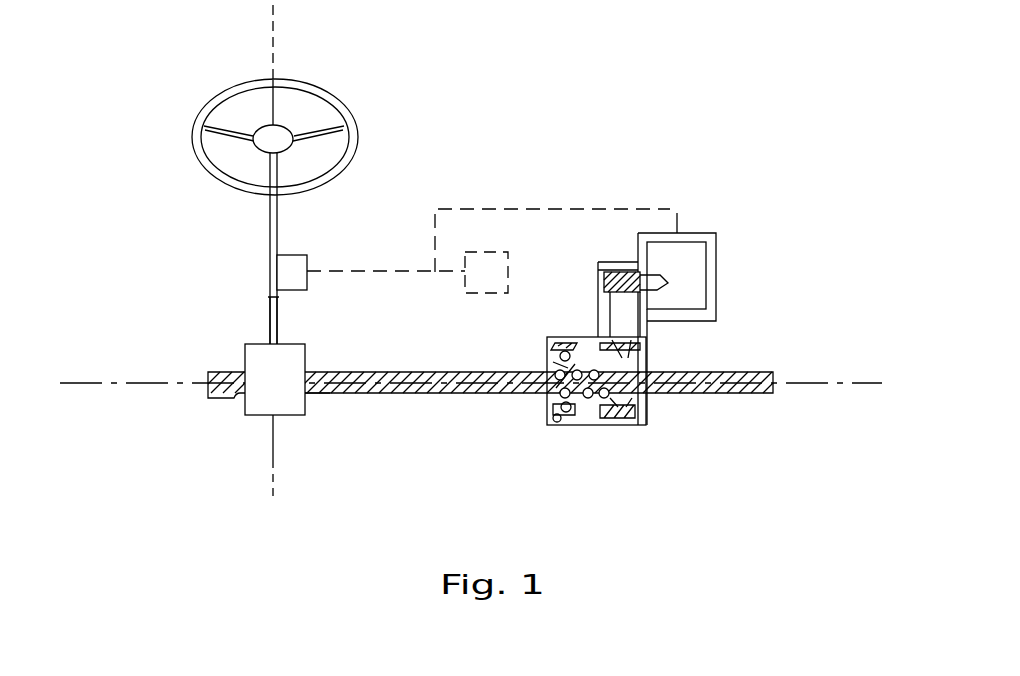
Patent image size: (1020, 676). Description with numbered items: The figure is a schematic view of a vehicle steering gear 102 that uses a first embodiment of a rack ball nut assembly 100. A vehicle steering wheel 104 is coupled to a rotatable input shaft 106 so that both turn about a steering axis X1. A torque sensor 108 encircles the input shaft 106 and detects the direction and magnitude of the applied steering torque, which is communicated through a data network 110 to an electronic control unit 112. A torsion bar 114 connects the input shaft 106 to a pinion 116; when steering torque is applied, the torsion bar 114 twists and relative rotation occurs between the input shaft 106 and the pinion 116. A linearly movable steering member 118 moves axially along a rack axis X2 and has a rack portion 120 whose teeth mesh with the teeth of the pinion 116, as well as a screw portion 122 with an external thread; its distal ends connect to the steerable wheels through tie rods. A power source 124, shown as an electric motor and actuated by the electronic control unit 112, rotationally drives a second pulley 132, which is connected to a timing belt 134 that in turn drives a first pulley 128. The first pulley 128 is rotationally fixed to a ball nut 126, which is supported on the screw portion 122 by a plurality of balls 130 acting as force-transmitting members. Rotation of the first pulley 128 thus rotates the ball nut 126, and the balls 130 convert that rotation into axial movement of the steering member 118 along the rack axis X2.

The rack ball nut assembly 100 is at (651, 357).
The vehicle steering gear 102 is at (320, 419).
The vehicle steering wheel 104 is at (323, 93).
The rotatable input shaft 106 is at (270, 221).
The torque sensor 108 is at (293, 255).
The data network 110 is at (513, 207).
The electronic control unit 112 is at (487, 294).
The torsion bar 114 is at (270, 325).
The pinion 116 is at (257, 417).
The linearly movable steering member 118 is at (436, 372).
The rack portion 120 is at (315, 393).
The screw portion 122 is at (548, 386).
The power source 124 is at (695, 258).
The ball nut 126 is at (590, 402).
The first pulley 128 is at (646, 412).
The balls 130 is at (560, 365).
The second pulley 132 is at (622, 274).
The timing belt 134 is at (604, 322).
The steering axis X1 is at (275, 472).
The rack axis X2 is at (820, 384).